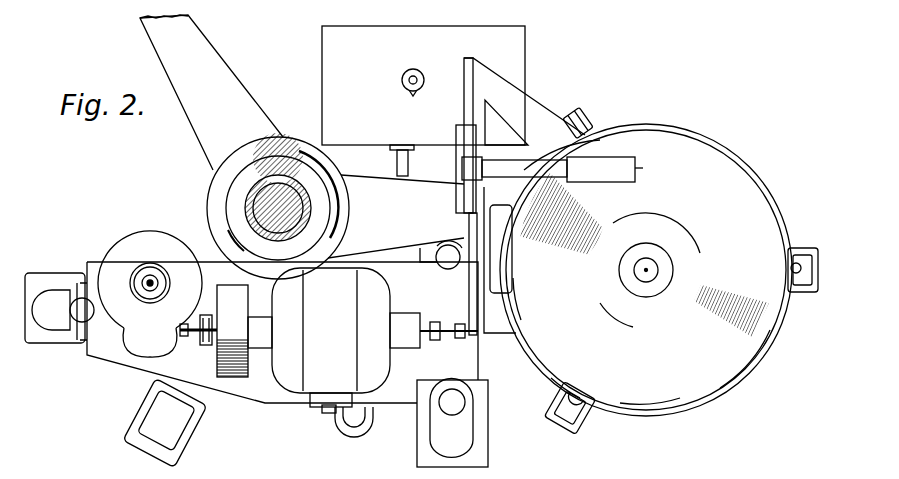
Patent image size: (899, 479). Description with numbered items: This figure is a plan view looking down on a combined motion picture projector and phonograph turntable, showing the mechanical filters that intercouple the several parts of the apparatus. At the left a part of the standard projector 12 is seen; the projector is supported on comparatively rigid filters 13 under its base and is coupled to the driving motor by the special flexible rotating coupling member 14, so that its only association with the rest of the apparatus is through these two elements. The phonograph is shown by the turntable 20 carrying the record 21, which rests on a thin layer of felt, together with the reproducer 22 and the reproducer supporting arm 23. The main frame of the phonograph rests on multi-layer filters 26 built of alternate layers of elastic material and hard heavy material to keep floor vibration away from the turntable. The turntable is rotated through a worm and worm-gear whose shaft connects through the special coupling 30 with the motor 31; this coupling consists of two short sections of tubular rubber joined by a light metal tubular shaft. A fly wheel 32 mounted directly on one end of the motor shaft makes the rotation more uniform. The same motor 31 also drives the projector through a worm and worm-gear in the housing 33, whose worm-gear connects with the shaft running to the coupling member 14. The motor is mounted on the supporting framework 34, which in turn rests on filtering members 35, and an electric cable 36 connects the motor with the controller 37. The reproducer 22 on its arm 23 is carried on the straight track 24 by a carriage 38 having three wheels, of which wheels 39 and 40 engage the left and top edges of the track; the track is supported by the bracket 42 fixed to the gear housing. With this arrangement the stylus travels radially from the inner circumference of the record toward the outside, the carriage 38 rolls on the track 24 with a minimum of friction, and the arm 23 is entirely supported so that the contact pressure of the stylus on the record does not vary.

The projector main part 12 is at (255, 198).
The supporting filter 13 is at (130, 430).
The rotating coupling member 14 is at (160, 268).
The turntable 20 is at (733, 160).
The record 21 is at (670, 158).
The reproducer 22 is at (598, 158).
The reproducer supporting arm 23 is at (533, 158).
The track 24 is at (463, 226).
The multi-layer filter 26 is at (582, 118).
The coupling 30 is at (488, 332).
The motor 31 is at (343, 295).
The fly wheel 32 is at (237, 300).
The housing 33 is at (140, 345).
The supporting framework 34 is at (155, 365).
The filtering member 35 is at (37, 276).
The electric cable 36 is at (330, 415).
The controller 37 is at (402, 80).
The carriage 38 is at (466, 130).
The wheel 39 is at (456, 140).
The wheel 40 is at (460, 192).
The bracket 42 is at (530, 120).